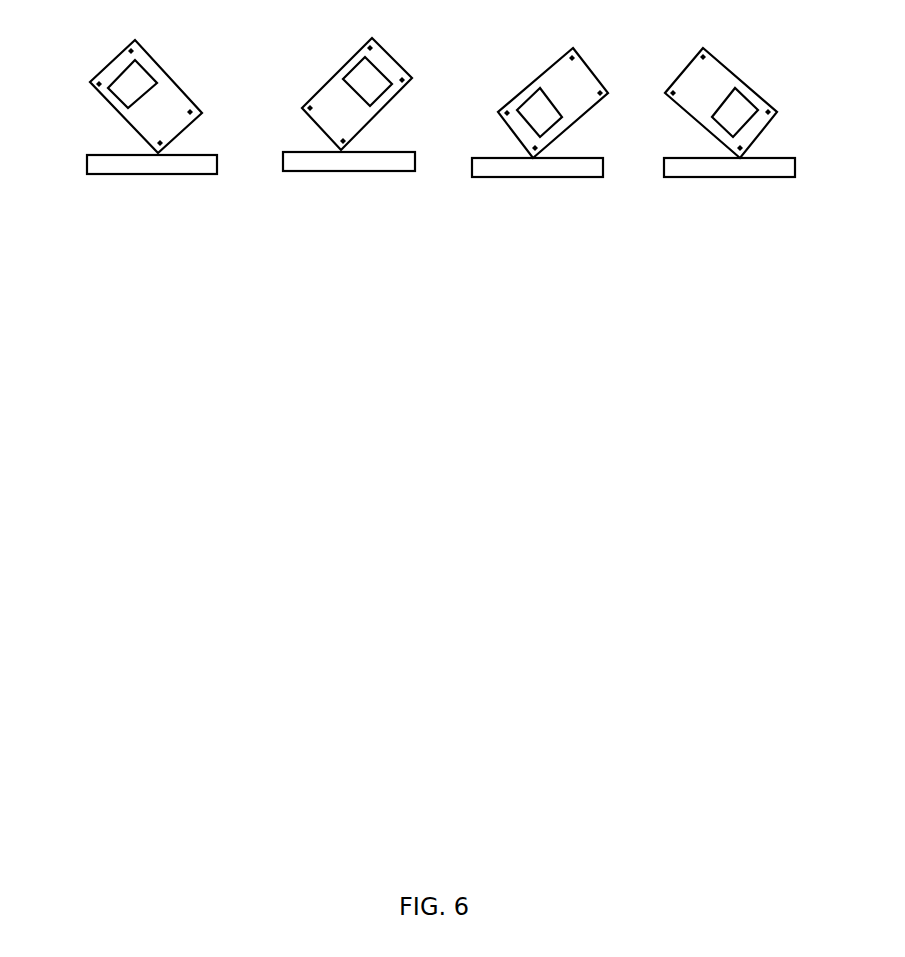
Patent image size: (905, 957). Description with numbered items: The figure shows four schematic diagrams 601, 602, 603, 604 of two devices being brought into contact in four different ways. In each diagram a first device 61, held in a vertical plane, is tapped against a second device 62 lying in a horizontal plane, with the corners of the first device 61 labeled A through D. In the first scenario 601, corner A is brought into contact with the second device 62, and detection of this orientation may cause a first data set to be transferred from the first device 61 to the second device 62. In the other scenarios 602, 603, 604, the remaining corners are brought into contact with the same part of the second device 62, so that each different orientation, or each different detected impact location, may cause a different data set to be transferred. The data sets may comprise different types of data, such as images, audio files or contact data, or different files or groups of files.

The first device 61 is at (115, 58).
The second device 62 is at (87, 163).
The first scenario 601 is at (126, 138).
The second scenario 602 is at (325, 211).
The third scenario 603 is at (515, 211).
The fourth scenario 604 is at (717, 211).